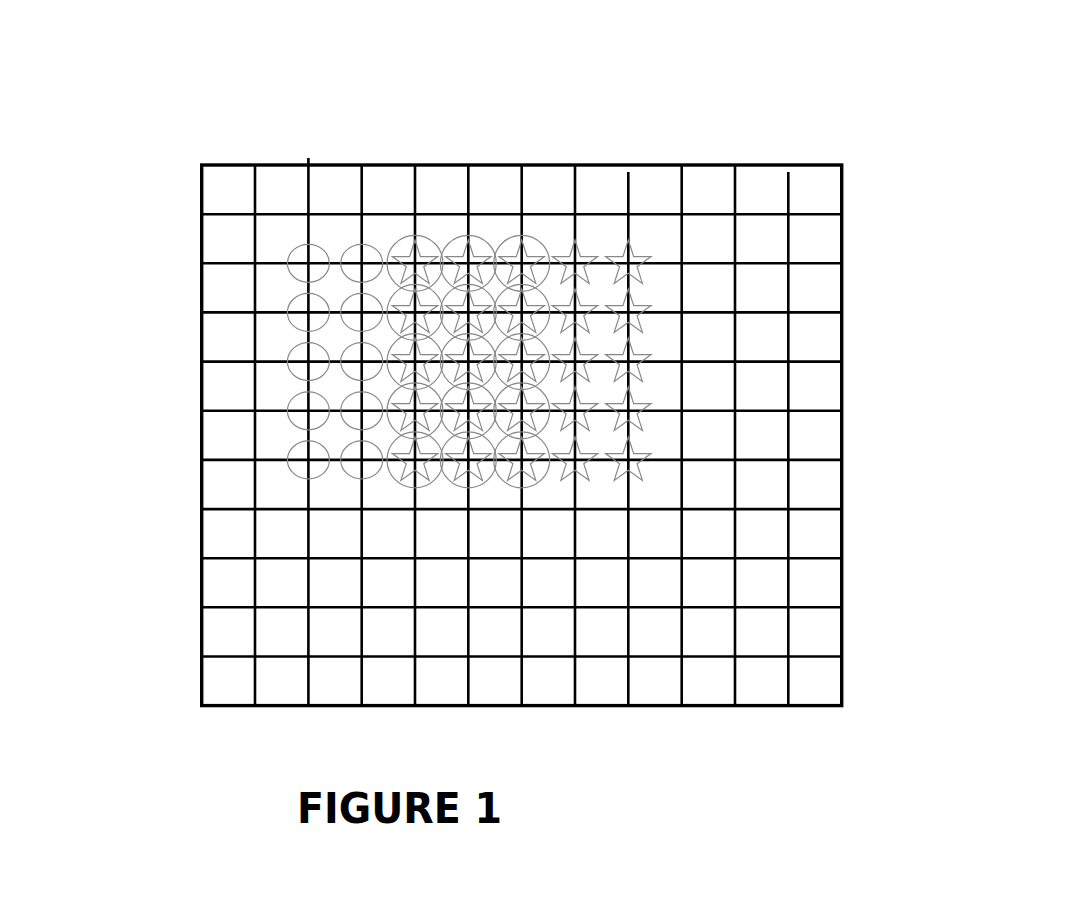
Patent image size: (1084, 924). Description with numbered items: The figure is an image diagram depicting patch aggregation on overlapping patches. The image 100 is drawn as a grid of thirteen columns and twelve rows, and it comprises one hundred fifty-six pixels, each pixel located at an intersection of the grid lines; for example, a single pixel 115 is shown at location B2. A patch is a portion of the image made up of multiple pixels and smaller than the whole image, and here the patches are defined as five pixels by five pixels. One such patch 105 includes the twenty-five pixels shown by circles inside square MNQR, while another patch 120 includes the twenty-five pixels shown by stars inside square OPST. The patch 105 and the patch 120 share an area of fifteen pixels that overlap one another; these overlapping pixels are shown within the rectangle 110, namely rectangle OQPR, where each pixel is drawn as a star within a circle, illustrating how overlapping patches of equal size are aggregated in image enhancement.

The image 100 is at (457, 377).
The patch 105 is at (288, 362).
The rectangle 110 is at (492, 260).
The pixel 115 is at (255, 213).
The patch 120 is at (642, 337).